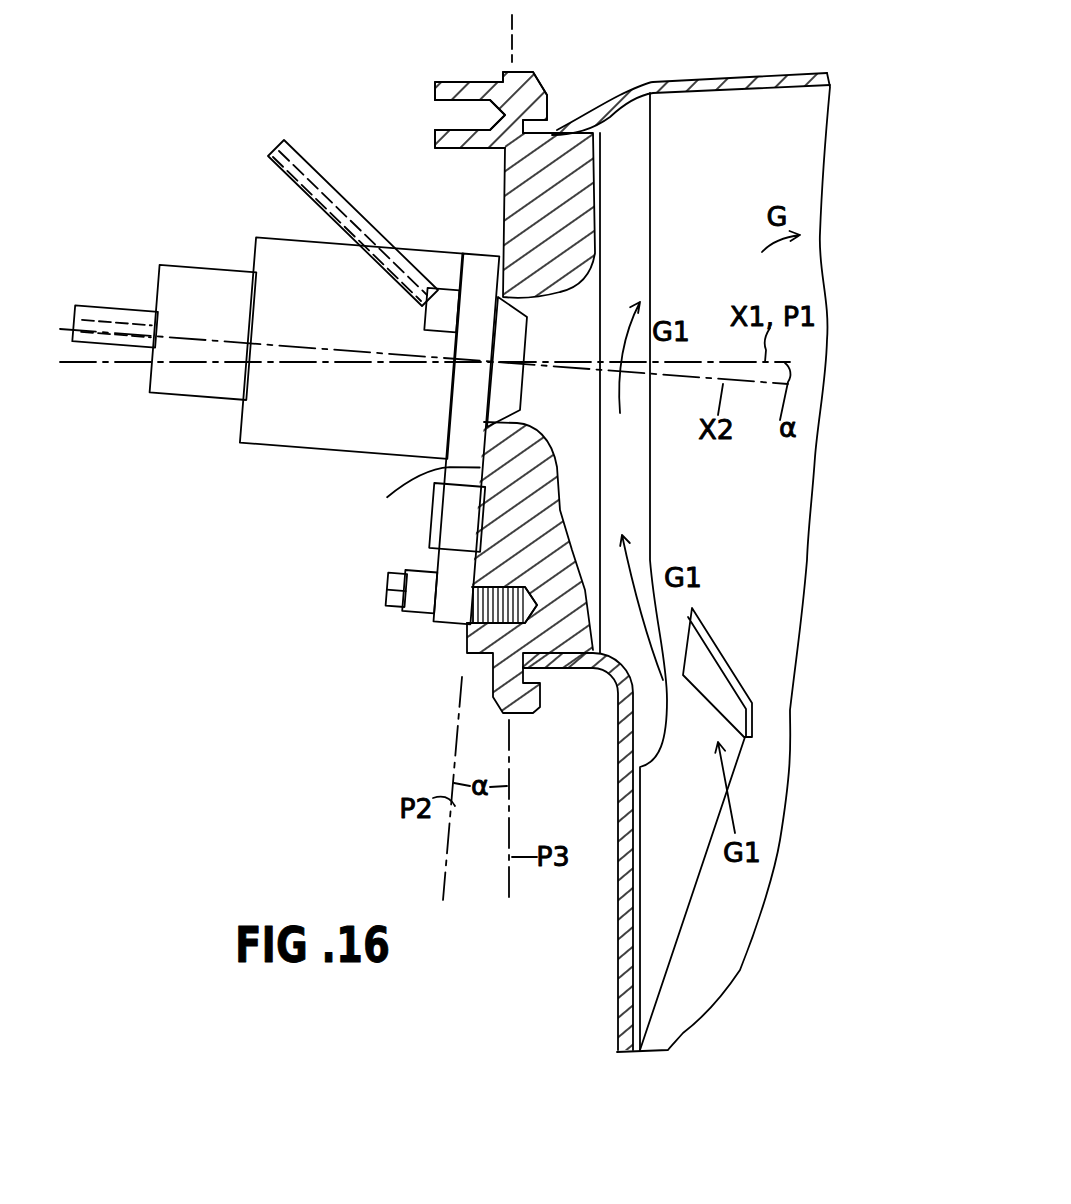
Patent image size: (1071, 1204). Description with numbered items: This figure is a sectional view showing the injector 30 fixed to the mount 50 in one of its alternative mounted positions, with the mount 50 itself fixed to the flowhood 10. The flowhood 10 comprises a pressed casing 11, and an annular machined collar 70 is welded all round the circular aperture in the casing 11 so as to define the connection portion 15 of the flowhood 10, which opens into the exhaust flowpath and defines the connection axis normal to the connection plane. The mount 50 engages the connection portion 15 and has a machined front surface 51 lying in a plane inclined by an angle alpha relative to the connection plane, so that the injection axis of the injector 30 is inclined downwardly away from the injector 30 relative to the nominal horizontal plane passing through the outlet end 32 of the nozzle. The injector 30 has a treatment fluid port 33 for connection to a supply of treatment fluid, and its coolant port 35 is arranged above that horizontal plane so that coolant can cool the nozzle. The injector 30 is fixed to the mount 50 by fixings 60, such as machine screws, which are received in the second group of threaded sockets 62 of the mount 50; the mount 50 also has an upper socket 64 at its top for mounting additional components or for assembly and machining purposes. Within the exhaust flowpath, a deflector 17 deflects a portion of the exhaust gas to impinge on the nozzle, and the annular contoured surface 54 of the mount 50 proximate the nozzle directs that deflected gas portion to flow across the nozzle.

The flowhood 10 is at (727, 73).
The casing 11 is at (620, 978).
The connection portion 15 is at (573, 66).
The deflector 17 is at (718, 662).
The injector 30 is at (287, 437).
The outlet end 32 is at (540, 335).
The treatment fluid port 33 is at (77, 307).
The coolant port 35 is at (275, 140).
The mount 50 is at (450, 82).
The front surface 51 is at (393, 497).
The contoured surface 54 is at (600, 257).
The fixings 60 is at (385, 606).
The second group of threaded sockets 62 is at (470, 630).
The upper socket 64 is at (450, 118).
The collar 70 is at (535, 712).